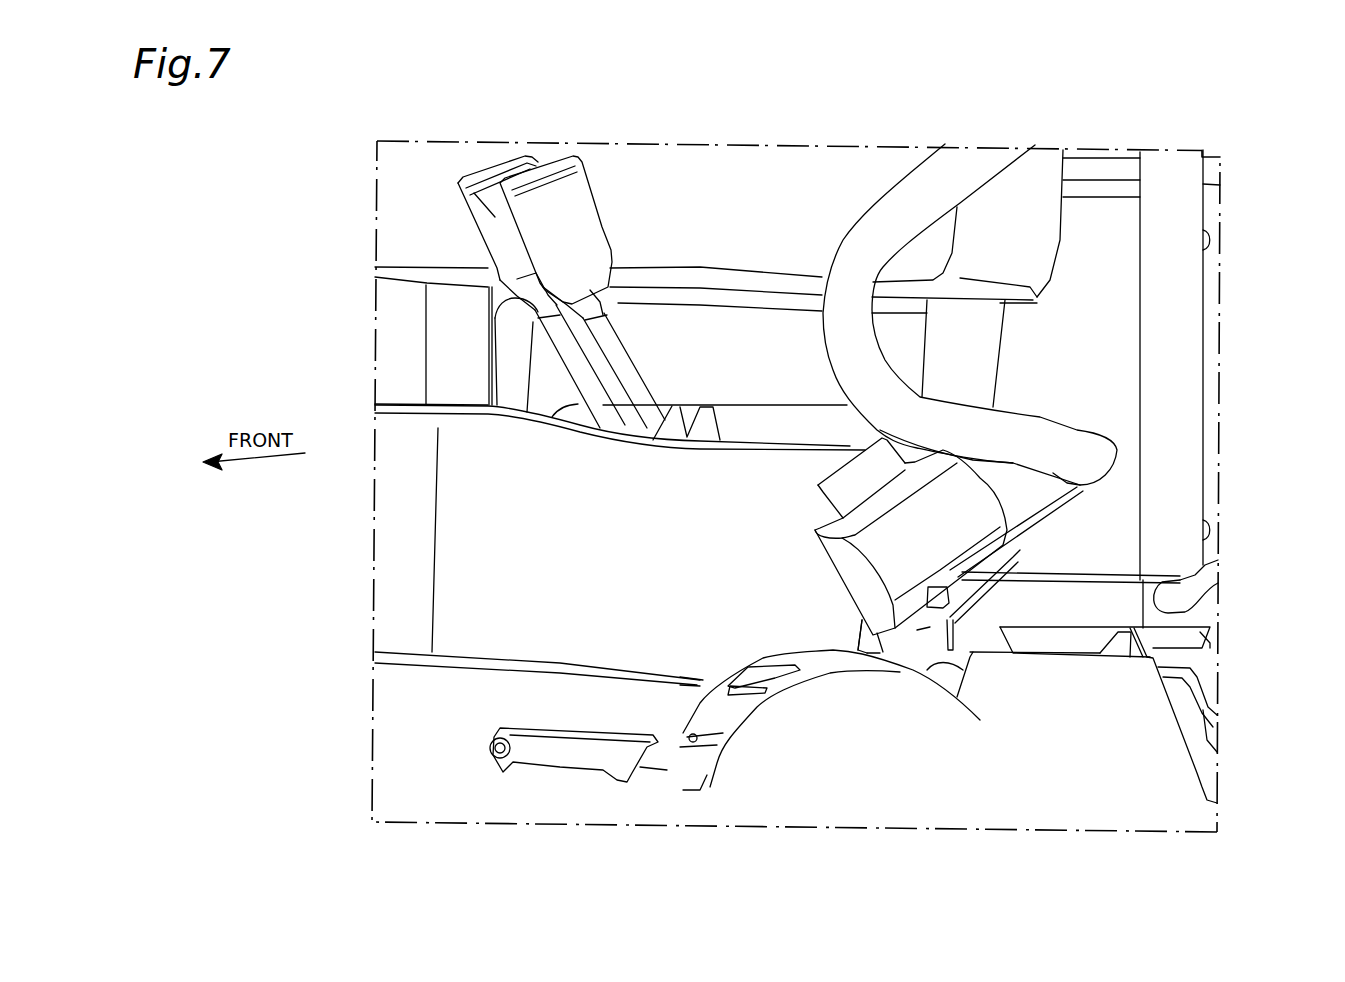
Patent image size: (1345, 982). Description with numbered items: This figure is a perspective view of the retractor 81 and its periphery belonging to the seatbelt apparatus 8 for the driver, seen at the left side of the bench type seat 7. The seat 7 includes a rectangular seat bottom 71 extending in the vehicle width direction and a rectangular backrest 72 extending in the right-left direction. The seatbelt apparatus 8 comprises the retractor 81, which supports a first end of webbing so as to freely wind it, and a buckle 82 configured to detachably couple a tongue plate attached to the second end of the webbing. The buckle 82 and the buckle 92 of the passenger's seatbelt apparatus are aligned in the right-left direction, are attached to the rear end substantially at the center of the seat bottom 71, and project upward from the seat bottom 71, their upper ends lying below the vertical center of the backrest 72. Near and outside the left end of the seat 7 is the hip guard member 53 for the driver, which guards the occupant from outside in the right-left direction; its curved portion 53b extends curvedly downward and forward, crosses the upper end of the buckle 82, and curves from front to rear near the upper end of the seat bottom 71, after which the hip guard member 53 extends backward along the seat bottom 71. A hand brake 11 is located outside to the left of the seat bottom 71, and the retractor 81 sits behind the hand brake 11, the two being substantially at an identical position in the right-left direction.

The seat 7 is at (356, 508).
The seatbelt apparatus 8 is at (980, 610).
The hand brake 11 is at (575, 748).
The hip guard member 53 is at (925, 252).
The curved portion 53b is at (850, 333).
The seat bottom 71 is at (527, 553).
The backrest 72 is at (777, 210).
The retractor 81 is at (912, 543).
The buckle 82 is at (577, 223).
The buckle 92 is at (492, 215).